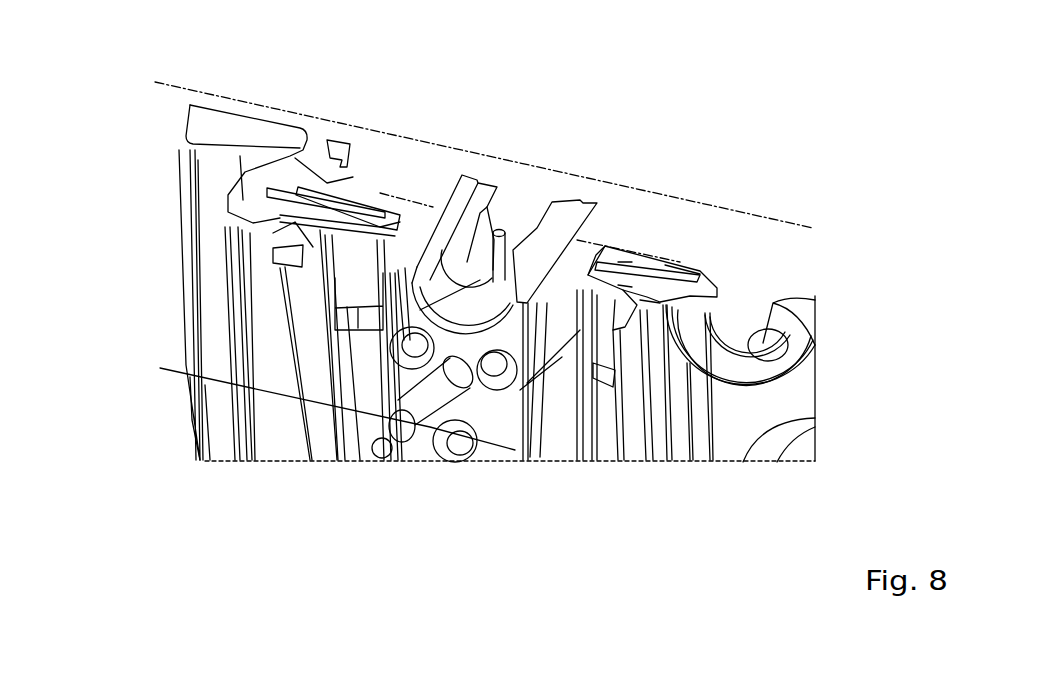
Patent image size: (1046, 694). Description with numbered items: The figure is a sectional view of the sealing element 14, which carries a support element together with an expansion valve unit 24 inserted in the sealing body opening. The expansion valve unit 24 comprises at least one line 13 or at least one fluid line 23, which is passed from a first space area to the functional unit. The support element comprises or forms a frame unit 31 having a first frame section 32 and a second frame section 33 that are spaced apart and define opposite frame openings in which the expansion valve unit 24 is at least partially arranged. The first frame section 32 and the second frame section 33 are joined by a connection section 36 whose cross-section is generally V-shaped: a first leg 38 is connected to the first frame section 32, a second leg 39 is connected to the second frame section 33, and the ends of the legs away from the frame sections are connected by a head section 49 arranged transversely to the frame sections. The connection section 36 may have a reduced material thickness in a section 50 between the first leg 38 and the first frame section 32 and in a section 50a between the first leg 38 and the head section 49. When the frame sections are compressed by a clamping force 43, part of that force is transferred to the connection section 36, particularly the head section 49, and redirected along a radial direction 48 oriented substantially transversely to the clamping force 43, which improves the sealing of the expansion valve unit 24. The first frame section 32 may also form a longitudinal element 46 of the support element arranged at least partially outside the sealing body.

The sealing element 14 is at (120, 82).
The clamping force 43 is at (333, 155).
The radial direction 48 is at (325, 200).
The expansion valve unit 24 is at (395, 318).
The line 13 is at (475, 272).
The fluid line 23 is at (499, 256).
The head section 49 is at (589, 259).
The second leg 39 is at (625, 258).
The first leg 38 is at (625, 282).
The connection section 36 is at (722, 73).
The second frame section 33 is at (675, 263).
The first frame section 32 is at (648, 298).
The frame unit 31 is at (878, 120).
The longitudinal element 46 is at (630, 317).
The section of reduced material thickness 50 is at (328, 228).
The section of reduced material thickness 50a is at (380, 233).